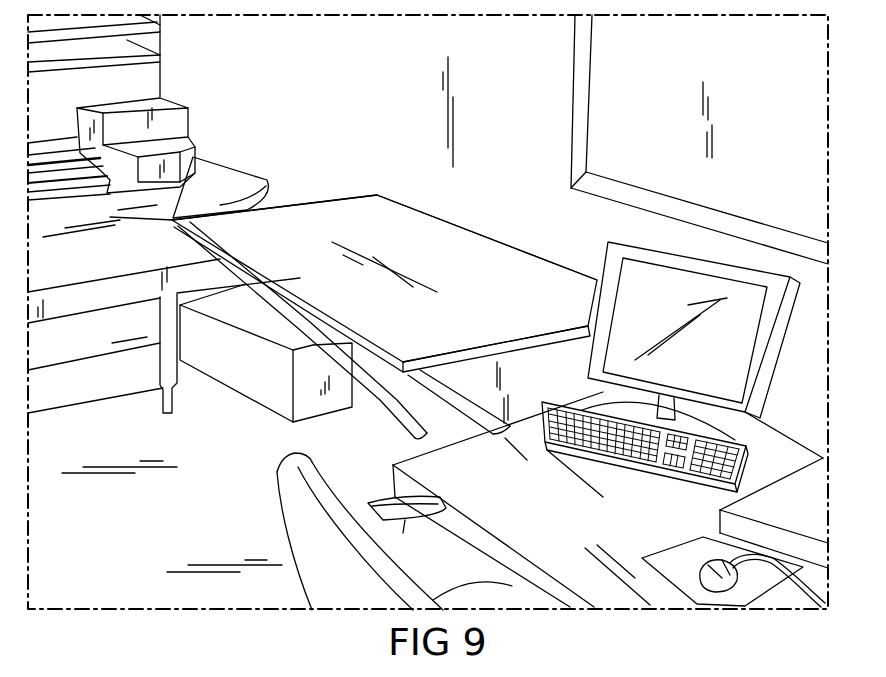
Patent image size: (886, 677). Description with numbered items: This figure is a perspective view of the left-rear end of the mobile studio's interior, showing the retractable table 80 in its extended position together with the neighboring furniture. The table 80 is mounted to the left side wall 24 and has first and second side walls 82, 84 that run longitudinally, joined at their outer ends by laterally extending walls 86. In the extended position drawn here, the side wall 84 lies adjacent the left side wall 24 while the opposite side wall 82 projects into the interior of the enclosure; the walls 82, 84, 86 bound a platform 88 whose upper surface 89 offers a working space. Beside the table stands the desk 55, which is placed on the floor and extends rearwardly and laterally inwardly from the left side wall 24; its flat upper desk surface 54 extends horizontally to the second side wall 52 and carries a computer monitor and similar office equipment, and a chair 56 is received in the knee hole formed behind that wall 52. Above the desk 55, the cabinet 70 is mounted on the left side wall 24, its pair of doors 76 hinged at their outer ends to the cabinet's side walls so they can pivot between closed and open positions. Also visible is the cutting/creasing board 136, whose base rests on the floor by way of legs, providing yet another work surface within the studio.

The left side wall 24 is at (375, 76).
The second side wall 52 is at (455, 567).
The upper desk surface 54 is at (545, 516).
The desk 55 is at (792, 443).
The chair 56 is at (386, 504).
The cabinet 70 is at (613, 199).
The doors 76 is at (657, 112).
The retractable table 80 is at (345, 198).
The first side wall 82 is at (377, 337).
The second side wall 84 is at (430, 213).
The walls 86 is at (295, 203).
The platform 88 is at (487, 253).
The upper surface 89 is at (313, 251).
The cutting/creasing board 136 is at (125, 299).